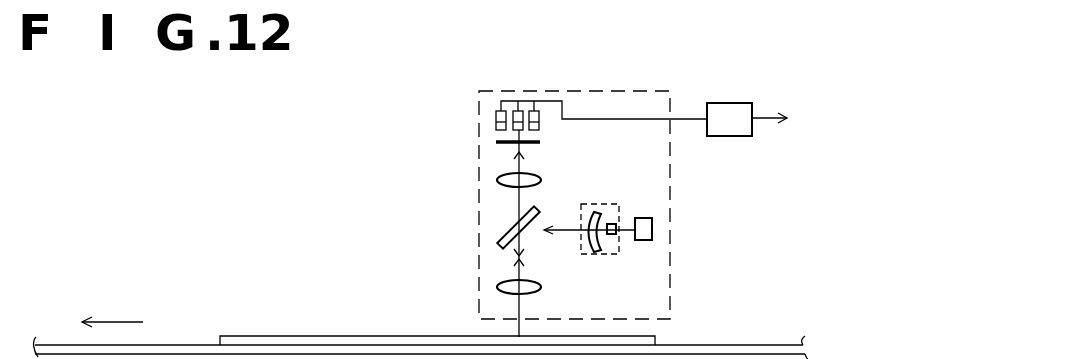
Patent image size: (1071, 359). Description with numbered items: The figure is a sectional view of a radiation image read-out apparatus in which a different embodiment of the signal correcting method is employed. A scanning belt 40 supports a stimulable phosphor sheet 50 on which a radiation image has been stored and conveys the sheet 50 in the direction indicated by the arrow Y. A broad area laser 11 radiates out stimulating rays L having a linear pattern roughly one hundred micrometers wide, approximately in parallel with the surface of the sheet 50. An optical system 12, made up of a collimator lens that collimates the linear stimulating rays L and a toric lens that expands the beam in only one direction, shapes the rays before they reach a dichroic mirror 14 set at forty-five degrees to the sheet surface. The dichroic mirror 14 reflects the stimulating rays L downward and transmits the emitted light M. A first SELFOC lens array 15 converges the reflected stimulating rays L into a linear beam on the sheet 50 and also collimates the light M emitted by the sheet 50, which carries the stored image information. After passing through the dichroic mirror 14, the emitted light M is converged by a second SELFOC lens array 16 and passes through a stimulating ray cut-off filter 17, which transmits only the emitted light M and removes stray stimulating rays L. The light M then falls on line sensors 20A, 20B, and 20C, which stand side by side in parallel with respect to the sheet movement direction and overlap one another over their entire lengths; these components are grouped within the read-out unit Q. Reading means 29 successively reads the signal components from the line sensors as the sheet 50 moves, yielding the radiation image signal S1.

The line sensor 20A is at (492, 108).
The line sensor 20B is at (514, 108).
The line sensor 20C is at (540, 108).
The stimulating ray cut-off filter 17 is at (500, 147).
The second SELFOC lens array 16 is at (498, 182).
The dichroic mirror 14 is at (497, 254).
The first SELFOC lens array 15 is at (541, 287).
The optical system 12 is at (612, 204).
The broad area laser 11 is at (653, 231).
The reading means 29 is at (723, 103).
The stimulable phosphor sheet 50 is at (286, 336).
The scanning belt 40 is at (741, 345).
The optical pickup unit Q is at (630, 92).
The stimulating rays L is at (566, 229).
The emitted light M is at (515, 207).
The radiation image signal S1 is at (764, 118).
The direction of sheet movement Y is at (112, 309).